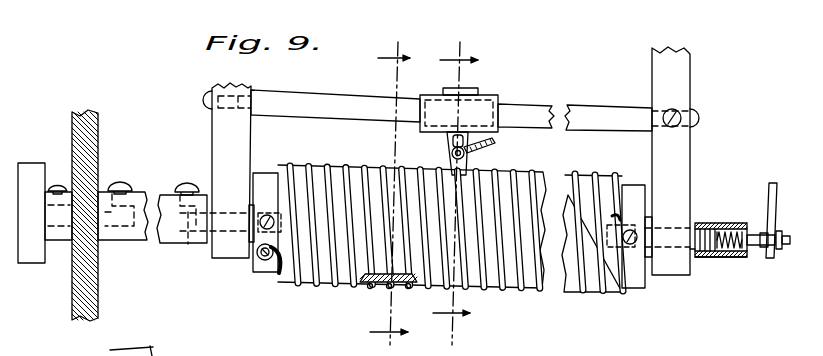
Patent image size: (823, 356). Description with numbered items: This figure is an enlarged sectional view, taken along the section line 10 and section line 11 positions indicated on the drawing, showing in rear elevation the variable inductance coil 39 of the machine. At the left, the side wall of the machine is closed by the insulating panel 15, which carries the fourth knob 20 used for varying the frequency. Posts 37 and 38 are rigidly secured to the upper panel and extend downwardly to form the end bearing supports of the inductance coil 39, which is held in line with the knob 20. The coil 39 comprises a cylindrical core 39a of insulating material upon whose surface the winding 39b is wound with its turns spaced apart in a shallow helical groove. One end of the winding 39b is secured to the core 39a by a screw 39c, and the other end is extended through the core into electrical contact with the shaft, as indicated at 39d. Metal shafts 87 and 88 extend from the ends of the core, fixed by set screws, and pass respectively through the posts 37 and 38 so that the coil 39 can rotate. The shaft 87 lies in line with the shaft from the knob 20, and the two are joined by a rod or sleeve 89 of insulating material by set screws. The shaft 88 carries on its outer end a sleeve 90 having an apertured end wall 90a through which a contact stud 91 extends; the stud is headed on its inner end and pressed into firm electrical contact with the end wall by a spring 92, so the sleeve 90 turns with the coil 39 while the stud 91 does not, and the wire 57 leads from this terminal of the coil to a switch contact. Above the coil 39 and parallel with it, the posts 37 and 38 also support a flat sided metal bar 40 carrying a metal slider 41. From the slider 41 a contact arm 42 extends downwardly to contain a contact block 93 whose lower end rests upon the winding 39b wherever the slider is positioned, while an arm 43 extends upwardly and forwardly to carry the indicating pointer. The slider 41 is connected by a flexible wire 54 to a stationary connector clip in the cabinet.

The section line 10- 10 is at (385, 195).
The section line 11- 11 is at (453, 191).
The insulating panel 15 is at (100, 125).
The fourth knob 20 is at (32, 259).
The post 37 is at (212, 125).
The post 38 is at (688, 155).
The inductance coil 39 is at (491, 282).
The cylindrical core 39a is at (628, 283).
The winding 39b is at (406, 290).
The screw 39c is at (266, 262).
The winding end contact 39d is at (633, 225).
The flat sided metal bar 40 is at (326, 99).
The metal slider 41 is at (490, 105).
The contact arm 42 is at (447, 145).
The arm 43 is at (455, 89).
The flexible wire 54 is at (494, 143).
The wire 57 is at (770, 183).
The metal shaft 87 is at (190, 246).
The metal shaft 88 is at (693, 232).
The rod or sleeve 89 is at (118, 238).
The sleeve 90 is at (732, 229).
The apertured end wall 90a is at (749, 252).
The contact stud 91 is at (763, 250).
The spring 92 is at (722, 258).
The contact block 93 is at (468, 158).